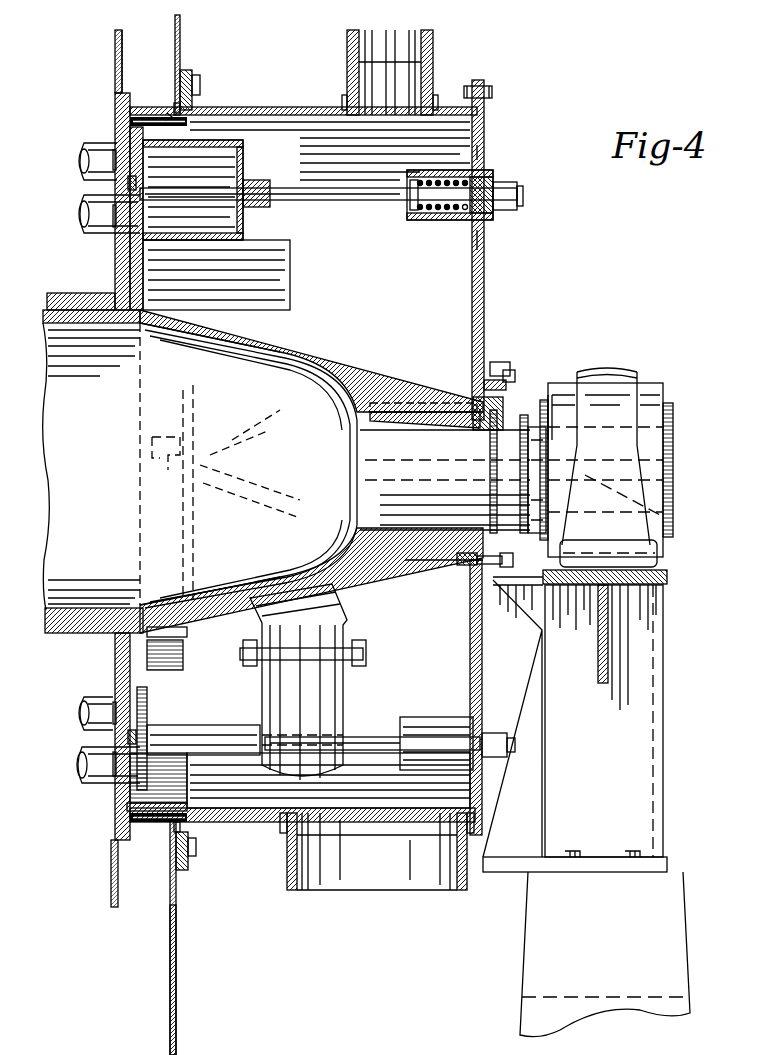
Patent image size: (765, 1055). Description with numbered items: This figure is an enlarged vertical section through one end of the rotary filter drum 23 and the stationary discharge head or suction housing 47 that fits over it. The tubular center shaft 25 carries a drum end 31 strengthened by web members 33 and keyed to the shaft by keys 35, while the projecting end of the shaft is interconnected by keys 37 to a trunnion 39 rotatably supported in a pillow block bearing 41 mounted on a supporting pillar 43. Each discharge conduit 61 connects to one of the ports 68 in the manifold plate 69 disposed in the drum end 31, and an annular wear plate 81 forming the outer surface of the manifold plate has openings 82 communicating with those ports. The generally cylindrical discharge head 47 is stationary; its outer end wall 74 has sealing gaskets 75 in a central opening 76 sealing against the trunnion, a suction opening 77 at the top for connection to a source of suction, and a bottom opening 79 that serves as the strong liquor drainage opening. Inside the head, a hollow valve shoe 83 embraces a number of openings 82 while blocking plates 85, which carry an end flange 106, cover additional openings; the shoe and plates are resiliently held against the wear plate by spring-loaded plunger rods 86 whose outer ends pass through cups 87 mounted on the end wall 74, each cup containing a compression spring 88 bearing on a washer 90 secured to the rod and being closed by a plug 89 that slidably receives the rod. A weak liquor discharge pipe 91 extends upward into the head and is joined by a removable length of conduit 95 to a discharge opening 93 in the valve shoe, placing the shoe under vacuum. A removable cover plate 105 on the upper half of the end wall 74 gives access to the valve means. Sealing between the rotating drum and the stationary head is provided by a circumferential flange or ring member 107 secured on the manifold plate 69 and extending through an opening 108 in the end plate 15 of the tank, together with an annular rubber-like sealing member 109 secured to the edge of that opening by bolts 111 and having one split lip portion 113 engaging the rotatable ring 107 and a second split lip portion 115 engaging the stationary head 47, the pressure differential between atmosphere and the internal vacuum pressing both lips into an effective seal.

The end plate 15 is at (176, 1013).
The rotary filter drum 23 is at (113, 86).
The tubular center shaft 25 is at (377, 372).
The drum end 31 is at (115, 45).
The web member 33 is at (66, 633).
The key 35 is at (42, 310).
The key 37 is at (435, 378).
The trunnion 39 is at (518, 410).
The pillow block bearing 41 is at (636, 374).
The supporting pillar 43 is at (640, 666).
The discharge head 47 is at (262, 112).
The discharge conduit 61 is at (104, 134).
The port 68 is at (112, 230).
The manifold plate 69 is at (115, 265).
The outer end wall 74 is at (482, 670).
The sealing gasket 75 is at (468, 372).
The central opening 76 is at (462, 568).
The suction opening 77 is at (410, 80).
The bottom opening 79 is at (300, 888).
The annular wear plate 81 is at (180, 129).
The opening 82 is at (128, 182).
The hollow valve shoe 83 is at (243, 163).
The blocking plate 85 is at (160, 690).
The plunger rod 86 is at (345, 192).
The cup 87 is at (470, 172).
The compression spring 88 is at (436, 180).
The plug 89 is at (505, 192).
The washer 90 is at (410, 208).
The weak liquor discharge pipe 91 is at (343, 686).
The discharge opening 93 is at (300, 352).
The removable length of conduit 95 is at (310, 535).
The removable cover plate 105 is at (484, 260).
The end flange 106 is at (183, 658).
The flange or ring member 107 is at (160, 117).
The opening 108 is at (172, 115).
The annular sealing member 109 is at (191, 74).
The bolt 111 is at (200, 84).
The split lip portion 113 is at (174, 107).
The split lip portion 115 is at (180, 30).